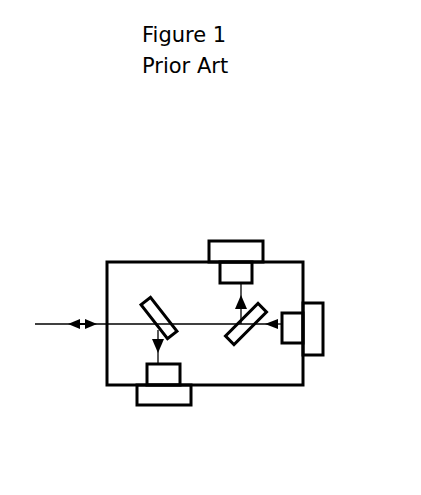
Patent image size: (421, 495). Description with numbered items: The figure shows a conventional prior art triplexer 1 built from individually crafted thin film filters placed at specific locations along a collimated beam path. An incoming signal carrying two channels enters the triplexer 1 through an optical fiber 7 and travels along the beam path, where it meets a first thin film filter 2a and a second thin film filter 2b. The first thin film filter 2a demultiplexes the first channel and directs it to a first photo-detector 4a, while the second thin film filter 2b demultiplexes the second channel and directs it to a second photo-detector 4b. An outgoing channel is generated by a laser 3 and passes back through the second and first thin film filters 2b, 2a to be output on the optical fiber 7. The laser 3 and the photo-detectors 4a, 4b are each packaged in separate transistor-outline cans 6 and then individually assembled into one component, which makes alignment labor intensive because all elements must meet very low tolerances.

The triplexer 1 is at (283, 181).
The first thin film filter 2a is at (157, 300).
The second thin film filter 2b is at (240, 343).
The laser 3 is at (294, 343).
The first photo-detector 4a is at (147, 367).
The second photo-detector 4b is at (252, 276).
The transistor-outline can 6 is at (242, 242).
The optical fiber 7 is at (58, 323).